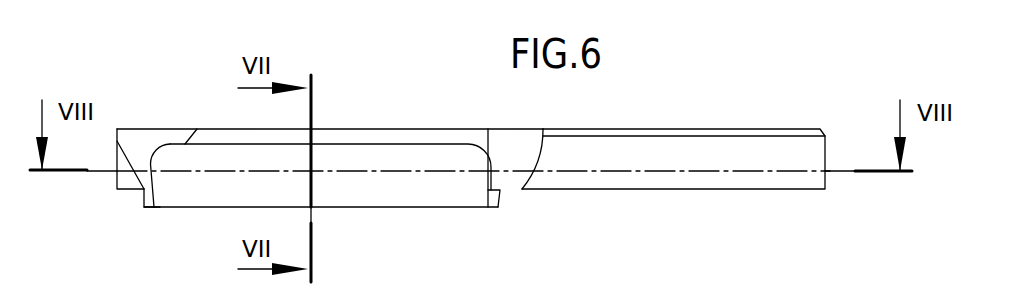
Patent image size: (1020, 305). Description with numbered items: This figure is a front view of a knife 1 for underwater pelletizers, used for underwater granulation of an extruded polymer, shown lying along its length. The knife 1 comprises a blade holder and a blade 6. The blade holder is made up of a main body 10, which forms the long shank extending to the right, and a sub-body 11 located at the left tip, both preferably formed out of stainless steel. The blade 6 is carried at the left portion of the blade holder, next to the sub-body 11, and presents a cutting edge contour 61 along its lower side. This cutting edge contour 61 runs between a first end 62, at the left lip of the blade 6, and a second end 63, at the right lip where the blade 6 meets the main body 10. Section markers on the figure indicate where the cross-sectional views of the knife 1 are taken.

The knife 1 is at (471, 165).
The blade 6 is at (328, 189).
The main body 10 is at (665, 182).
The sub-body 11 is at (148, 140).
The cutting edge contour 61 is at (406, 214).
The first end 62 is at (152, 212).
The second end 63 is at (492, 214).